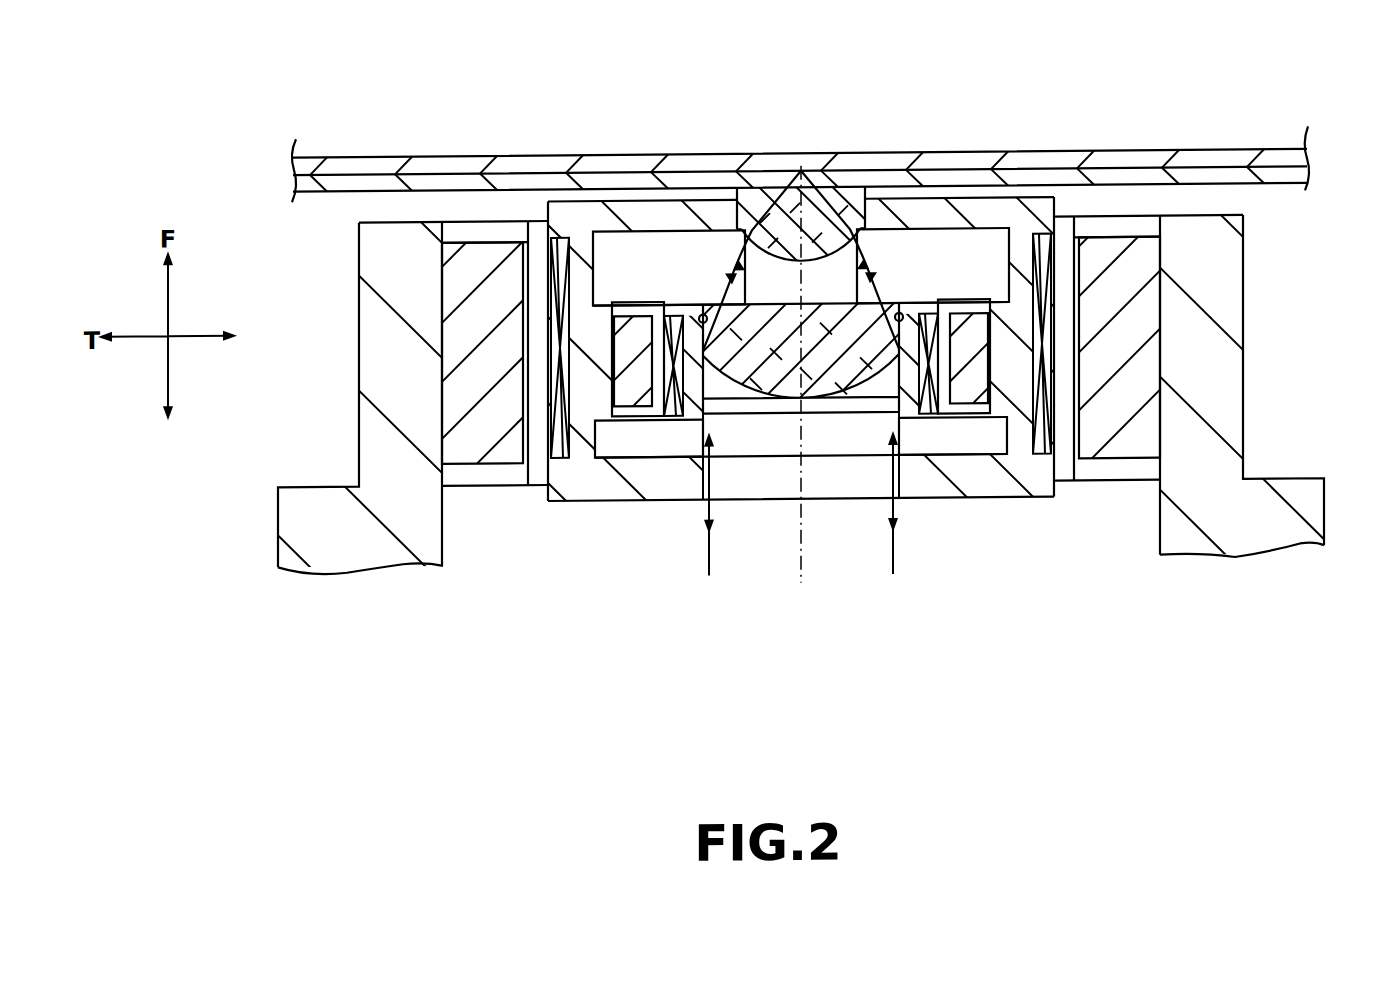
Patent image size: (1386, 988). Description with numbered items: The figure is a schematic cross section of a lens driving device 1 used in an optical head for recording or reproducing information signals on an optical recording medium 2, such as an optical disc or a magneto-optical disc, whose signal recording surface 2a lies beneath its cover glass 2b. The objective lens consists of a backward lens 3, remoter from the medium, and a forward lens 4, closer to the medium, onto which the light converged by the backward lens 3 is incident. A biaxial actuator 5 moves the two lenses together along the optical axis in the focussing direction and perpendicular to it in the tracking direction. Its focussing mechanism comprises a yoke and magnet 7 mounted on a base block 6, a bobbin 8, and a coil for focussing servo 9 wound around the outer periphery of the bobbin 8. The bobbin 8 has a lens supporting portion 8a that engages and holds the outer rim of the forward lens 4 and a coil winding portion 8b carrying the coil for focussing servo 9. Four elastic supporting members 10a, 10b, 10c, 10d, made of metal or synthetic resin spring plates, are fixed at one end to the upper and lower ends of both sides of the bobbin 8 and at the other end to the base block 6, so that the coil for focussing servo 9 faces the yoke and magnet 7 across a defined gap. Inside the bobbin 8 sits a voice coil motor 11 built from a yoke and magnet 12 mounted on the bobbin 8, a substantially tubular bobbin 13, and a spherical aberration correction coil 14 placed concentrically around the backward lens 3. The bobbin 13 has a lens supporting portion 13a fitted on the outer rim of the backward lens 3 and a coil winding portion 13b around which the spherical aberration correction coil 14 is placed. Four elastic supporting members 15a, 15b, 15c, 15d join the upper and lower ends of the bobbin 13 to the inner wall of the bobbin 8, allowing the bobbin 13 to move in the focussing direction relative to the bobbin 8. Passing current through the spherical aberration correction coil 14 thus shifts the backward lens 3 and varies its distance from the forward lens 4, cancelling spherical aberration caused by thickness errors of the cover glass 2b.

The lens driving device 1 is at (575, 598).
The optical recording medium 2 is at (1268, 111).
The signal recording surface 2a is at (1219, 162).
The cover glass 2b is at (1246, 178).
The backward lens 3 is at (825, 388).
The forward lens 4 is at (812, 260).
The biaxial actuator 5 is at (1076, 510).
The base block 6 is at (1318, 521).
The yoke and magnet 7 is at (1122, 354).
The bobbin 8 is at (928, 214).
The lens supporting portion 8a is at (853, 190).
The coil winding portion 8b is at (1055, 236).
The coil for focussing servo 9 is at (1043, 245).
The elastic supporting member 10a is at (1128, 219).
The elastic supporting member 10b is at (1121, 487).
The elastic supporting member 10c is at (478, 219).
The elastic supporting member 10d is at (491, 487).
The voice coil motor 11 is at (664, 286).
The yoke and magnet 12 is at (1000, 460).
The bobbin 13 is at (891, 458).
The lens supporting portion 13a is at (899, 316).
The coil winding portion 13b is at (917, 418).
The spherical aberration correction coil 14 is at (971, 330).
The elastic supporting member 15a is at (953, 302).
The elastic supporting member 15b is at (967, 425).
The elastic supporting member 15c is at (639, 302).
The elastic supporting member 15d is at (637, 425).